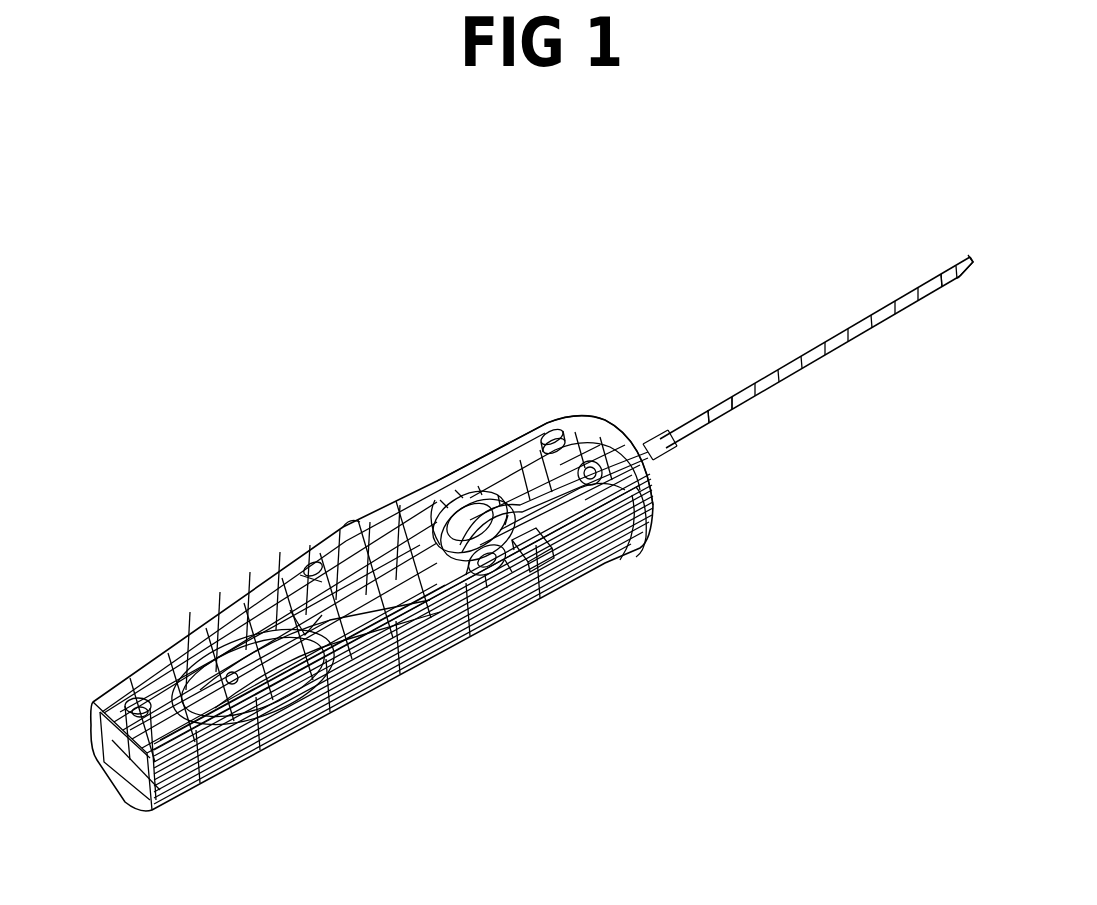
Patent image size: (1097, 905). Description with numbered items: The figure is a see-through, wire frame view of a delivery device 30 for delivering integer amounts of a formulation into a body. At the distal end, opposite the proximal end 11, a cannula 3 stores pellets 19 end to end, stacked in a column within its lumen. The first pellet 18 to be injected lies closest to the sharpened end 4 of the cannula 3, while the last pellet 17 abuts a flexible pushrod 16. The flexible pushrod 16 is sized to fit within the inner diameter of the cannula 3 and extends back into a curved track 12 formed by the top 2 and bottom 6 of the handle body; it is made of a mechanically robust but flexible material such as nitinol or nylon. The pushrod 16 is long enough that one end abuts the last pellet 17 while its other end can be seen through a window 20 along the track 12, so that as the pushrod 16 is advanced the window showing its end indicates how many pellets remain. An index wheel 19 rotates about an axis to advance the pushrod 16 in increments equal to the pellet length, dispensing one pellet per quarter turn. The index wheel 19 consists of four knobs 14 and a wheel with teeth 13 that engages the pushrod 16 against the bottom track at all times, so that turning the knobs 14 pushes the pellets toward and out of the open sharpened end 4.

The delivery device 30 is at (462, 211).
The index wheel 19 is at (457, 484).
The sharpened end 4 is at (972, 257).
The top of the handle body 2 is at (566, 418).
The first pellet 18 is at (950, 285).
The cannula 3 is at (778, 390).
The last pellet 17 is at (732, 413).
The window 20 is at (307, 566).
The flexible pushrod 16 is at (672, 447).
The bottom of the handle body 6 is at (598, 565).
The knobs 14 is at (530, 562).
The wheel with teeth 13 is at (487, 572).
The curved track 12 is at (395, 612).
The proximal end 11 is at (225, 776).